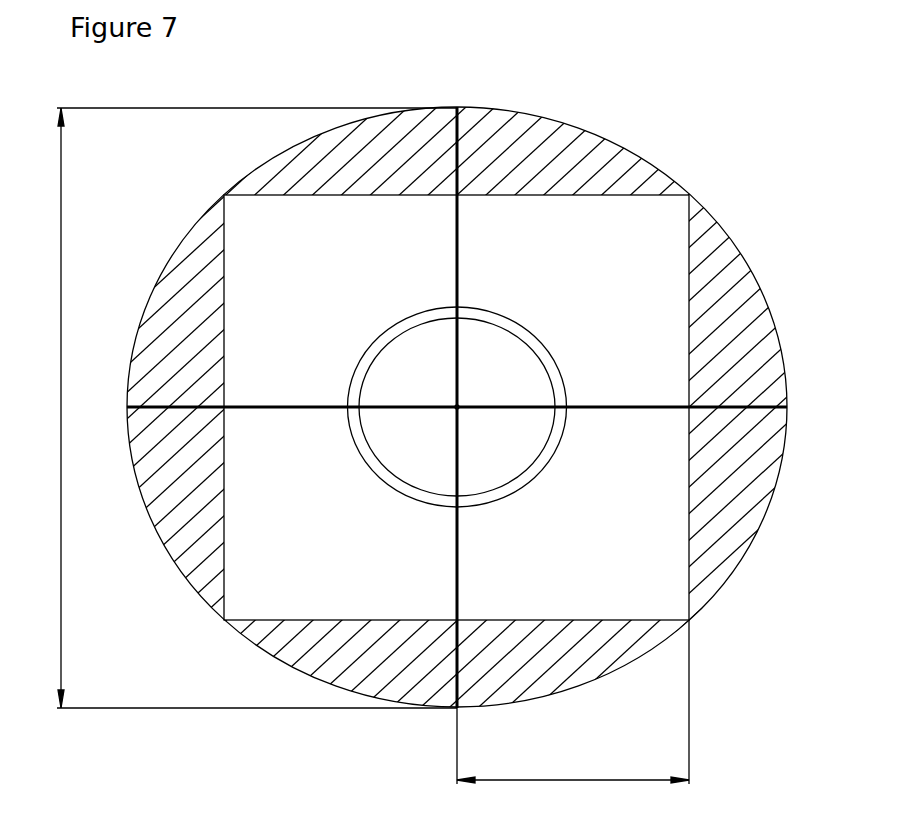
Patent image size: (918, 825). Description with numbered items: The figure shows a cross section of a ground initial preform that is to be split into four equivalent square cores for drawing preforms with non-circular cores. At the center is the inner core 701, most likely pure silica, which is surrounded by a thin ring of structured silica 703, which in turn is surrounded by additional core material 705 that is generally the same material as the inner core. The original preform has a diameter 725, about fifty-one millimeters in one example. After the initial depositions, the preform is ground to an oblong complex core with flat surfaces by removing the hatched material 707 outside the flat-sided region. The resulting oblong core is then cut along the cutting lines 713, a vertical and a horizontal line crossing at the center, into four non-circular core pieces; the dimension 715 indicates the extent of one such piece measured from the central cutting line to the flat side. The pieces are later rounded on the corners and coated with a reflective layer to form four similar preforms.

The inner core 701 is at (489, 391).
The structured silica 703 is at (537, 467).
The additional core material 705 is at (456, 407).
The removed material 707 is at (727, 307).
The cutting lines 713 is at (486, 384).
The half-width dimension 715 is at (573, 702).
The diameter 725 is at (232, 408).